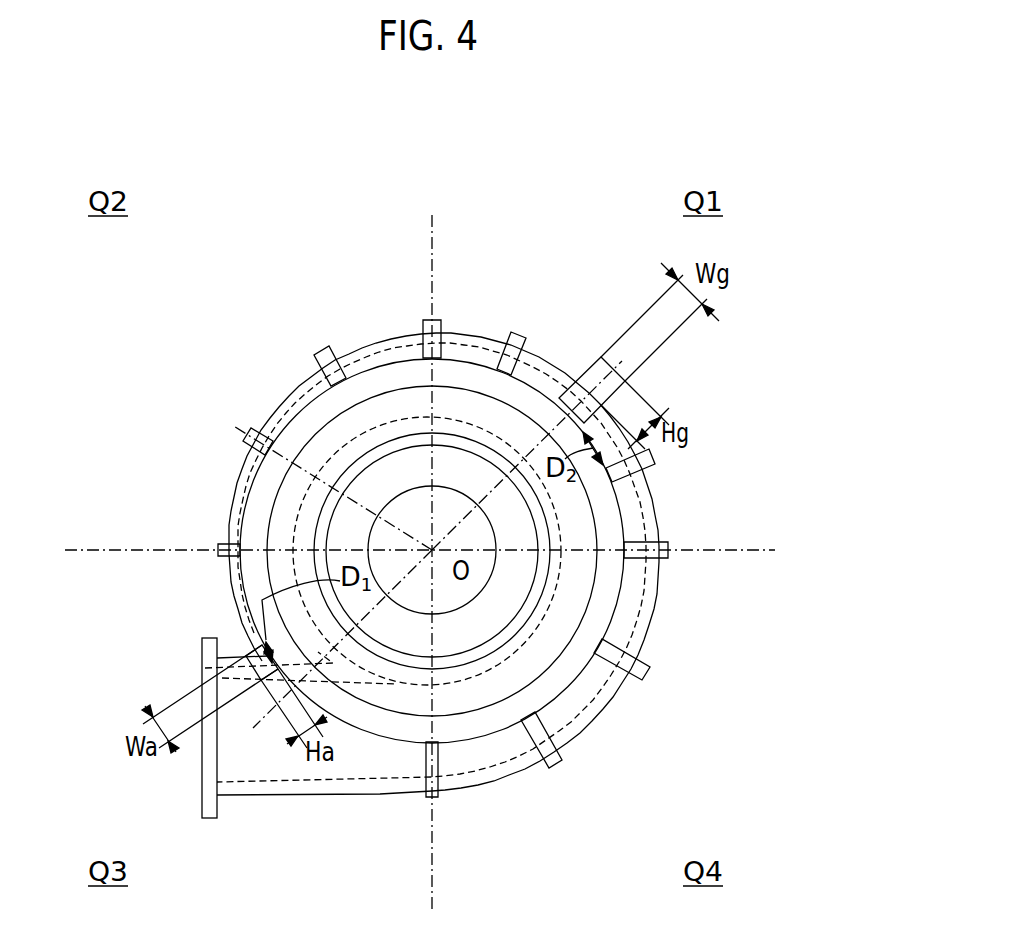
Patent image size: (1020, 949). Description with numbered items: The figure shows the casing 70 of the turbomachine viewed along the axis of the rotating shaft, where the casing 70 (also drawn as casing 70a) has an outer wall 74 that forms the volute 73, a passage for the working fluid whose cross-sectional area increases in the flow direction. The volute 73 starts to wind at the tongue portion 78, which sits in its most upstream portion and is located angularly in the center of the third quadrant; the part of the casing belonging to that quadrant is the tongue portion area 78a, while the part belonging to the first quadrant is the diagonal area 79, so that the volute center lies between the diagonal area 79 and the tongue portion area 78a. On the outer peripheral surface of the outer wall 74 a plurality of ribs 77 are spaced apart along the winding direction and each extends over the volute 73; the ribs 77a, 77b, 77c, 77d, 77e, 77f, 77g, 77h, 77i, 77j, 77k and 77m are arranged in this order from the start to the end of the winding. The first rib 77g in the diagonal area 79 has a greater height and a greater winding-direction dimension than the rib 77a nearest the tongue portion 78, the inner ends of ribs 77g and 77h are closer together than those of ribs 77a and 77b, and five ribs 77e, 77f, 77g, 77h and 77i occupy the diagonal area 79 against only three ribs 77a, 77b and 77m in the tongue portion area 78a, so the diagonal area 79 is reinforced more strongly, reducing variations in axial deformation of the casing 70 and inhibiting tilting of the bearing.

The casing 70 is at (505, 215).
The scroll casing 70a is at (437, 582).
The volute 73 is at (570, 687).
The outer wall 74 is at (647, 616).
The ribs 77 is at (443, 562).
The rib 77a is at (268, 650).
The rib 77b is at (232, 548).
The rib 77c is at (250, 440).
The rib 77d is at (327, 353).
The rib 77e is at (427, 322).
The rib 77f is at (515, 333).
The first rib 77g is at (623, 385).
The rib 77h is at (656, 472).
The rib 77i is at (663, 562).
The rib 77j is at (641, 676).
The rib 77k is at (554, 765).
The rib 77m is at (434, 797).
The tongue portion 78 is at (315, 678).
The tongue portion area 78a is at (228, 604).
The diagonal area 79 is at (552, 350).